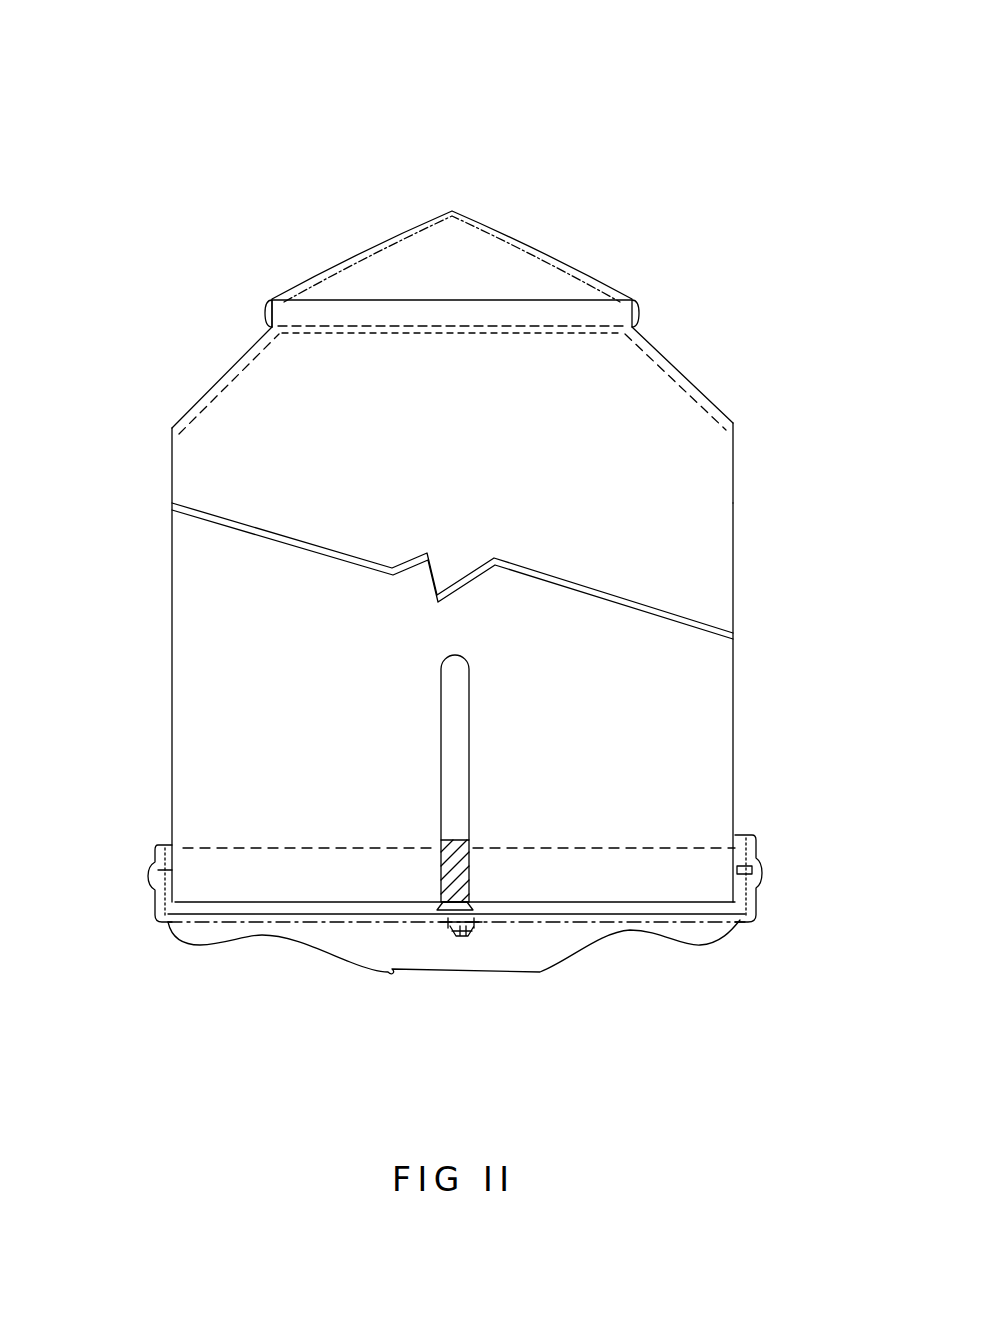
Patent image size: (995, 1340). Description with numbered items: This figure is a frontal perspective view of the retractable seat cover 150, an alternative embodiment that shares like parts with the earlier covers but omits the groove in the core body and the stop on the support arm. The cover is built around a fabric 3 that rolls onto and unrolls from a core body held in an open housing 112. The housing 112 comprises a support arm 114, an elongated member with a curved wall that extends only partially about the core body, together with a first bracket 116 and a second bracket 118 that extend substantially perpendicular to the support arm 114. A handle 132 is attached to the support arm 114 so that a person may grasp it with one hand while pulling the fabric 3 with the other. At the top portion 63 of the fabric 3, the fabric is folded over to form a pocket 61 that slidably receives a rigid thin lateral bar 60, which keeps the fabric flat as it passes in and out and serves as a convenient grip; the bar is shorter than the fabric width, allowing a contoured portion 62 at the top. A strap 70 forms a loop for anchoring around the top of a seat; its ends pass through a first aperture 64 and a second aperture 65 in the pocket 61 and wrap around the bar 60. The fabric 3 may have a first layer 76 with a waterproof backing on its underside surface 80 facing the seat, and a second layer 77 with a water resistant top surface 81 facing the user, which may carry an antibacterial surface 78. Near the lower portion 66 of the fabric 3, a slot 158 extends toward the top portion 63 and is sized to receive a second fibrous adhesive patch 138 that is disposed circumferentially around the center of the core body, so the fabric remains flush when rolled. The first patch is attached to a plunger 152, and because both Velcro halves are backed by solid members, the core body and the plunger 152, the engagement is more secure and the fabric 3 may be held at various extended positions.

The retractable seat cover 150 is at (261, 111).
The strap 70 is at (525, 246).
The pocket 61 is at (577, 313).
The first aperture 64 is at (268, 312).
The bar 60 is at (272, 324).
The second aperture 65 is at (640, 318).
The top portion of the fabric 63 is at (228, 464).
The contoured portion 62 is at (688, 382).
The fabric 3 is at (702, 494).
The top surface 81 is at (212, 612).
The underside surface 80 is at (693, 665).
The lower portion of the fabric 66 is at (218, 695).
The antibacterial surface 78 is at (706, 694).
The second layer 77 is at (700, 750).
The first layer 76 is at (733, 783).
The slot 158 is at (452, 733).
The second fibrous adhesive patch 138 is at (466, 878).
The support arm 114 is at (232, 930).
The second bracket 118 is at (750, 913).
The handle 132 is at (470, 956).
The plunger 152 is at (455, 932).
The first bracket 116 is at (163, 912).
The housing 112 is at (702, 930).